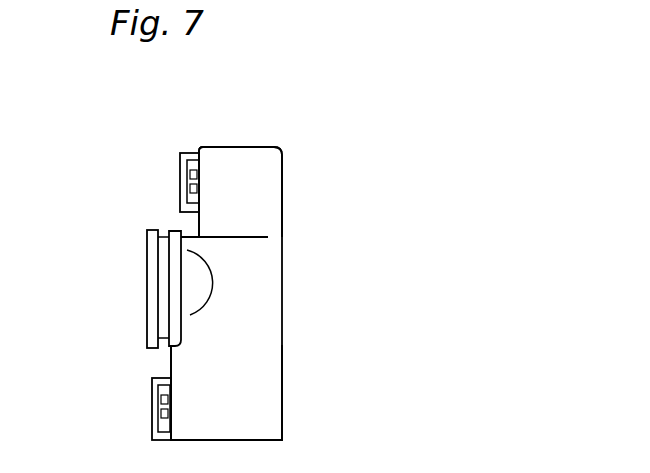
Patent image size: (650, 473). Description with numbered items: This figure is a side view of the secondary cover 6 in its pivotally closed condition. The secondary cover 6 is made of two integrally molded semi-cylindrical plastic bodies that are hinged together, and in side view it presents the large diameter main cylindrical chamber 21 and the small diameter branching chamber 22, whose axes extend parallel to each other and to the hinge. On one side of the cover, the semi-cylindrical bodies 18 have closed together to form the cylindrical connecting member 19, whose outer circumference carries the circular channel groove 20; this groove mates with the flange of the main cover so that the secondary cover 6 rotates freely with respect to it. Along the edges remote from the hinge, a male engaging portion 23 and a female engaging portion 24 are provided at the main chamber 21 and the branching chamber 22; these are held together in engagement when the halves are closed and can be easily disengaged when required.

The secondary cover 6 is at (287, 271).
The semi-cylindrical body 18 is at (147, 285).
The cylindrical connecting member 19 is at (132, 243).
The circular channel groove 20 is at (168, 231).
The main cylindrical chamber 21 is at (268, 400).
The branching chamber 22 is at (270, 180).
The male engaging portion 23 is at (188, 172).
The female engaging portion 24 is at (183, 177).